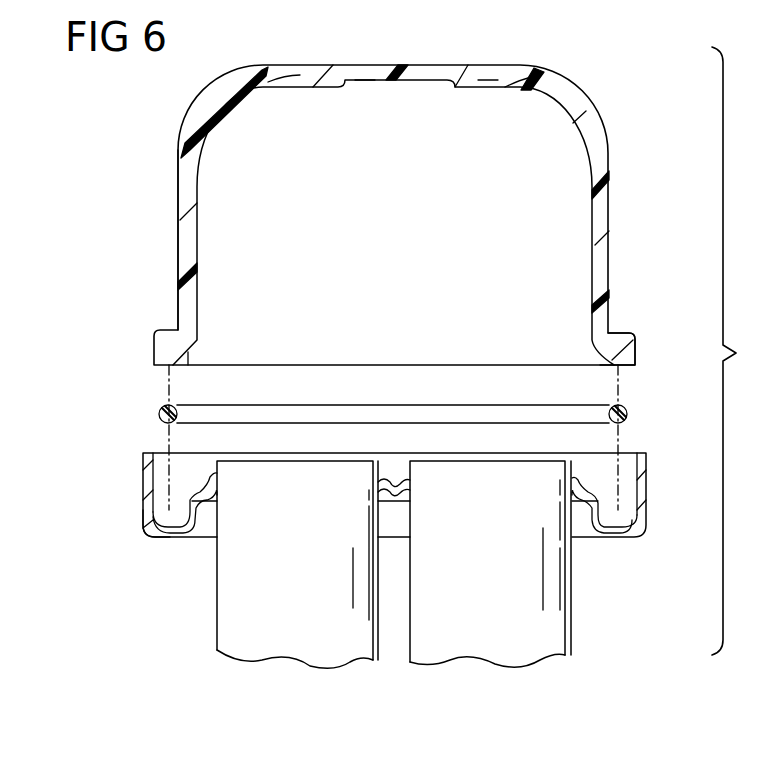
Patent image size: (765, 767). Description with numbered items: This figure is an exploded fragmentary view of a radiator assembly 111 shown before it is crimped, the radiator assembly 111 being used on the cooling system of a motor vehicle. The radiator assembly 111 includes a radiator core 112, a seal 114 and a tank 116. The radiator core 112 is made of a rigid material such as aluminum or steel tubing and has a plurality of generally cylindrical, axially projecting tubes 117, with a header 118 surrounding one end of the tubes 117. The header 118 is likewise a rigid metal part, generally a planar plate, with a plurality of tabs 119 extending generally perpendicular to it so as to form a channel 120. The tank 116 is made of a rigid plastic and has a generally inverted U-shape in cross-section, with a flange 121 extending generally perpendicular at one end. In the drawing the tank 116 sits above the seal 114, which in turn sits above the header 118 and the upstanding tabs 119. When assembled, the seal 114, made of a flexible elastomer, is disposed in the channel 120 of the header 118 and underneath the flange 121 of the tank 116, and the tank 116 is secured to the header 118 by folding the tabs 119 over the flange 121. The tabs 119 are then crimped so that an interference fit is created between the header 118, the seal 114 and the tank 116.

The radiator assembly 111 is at (152, 172).
The tank 116 is at (610, 178).
The flange 121 is at (616, 348).
The seal 114 is at (627, 410).
The header 118 is at (158, 539).
The tabs 119 is at (148, 486).
The channel 120 is at (152, 519).
The radiator core 112 is at (576, 574).
The tubes 117 is at (282, 646).